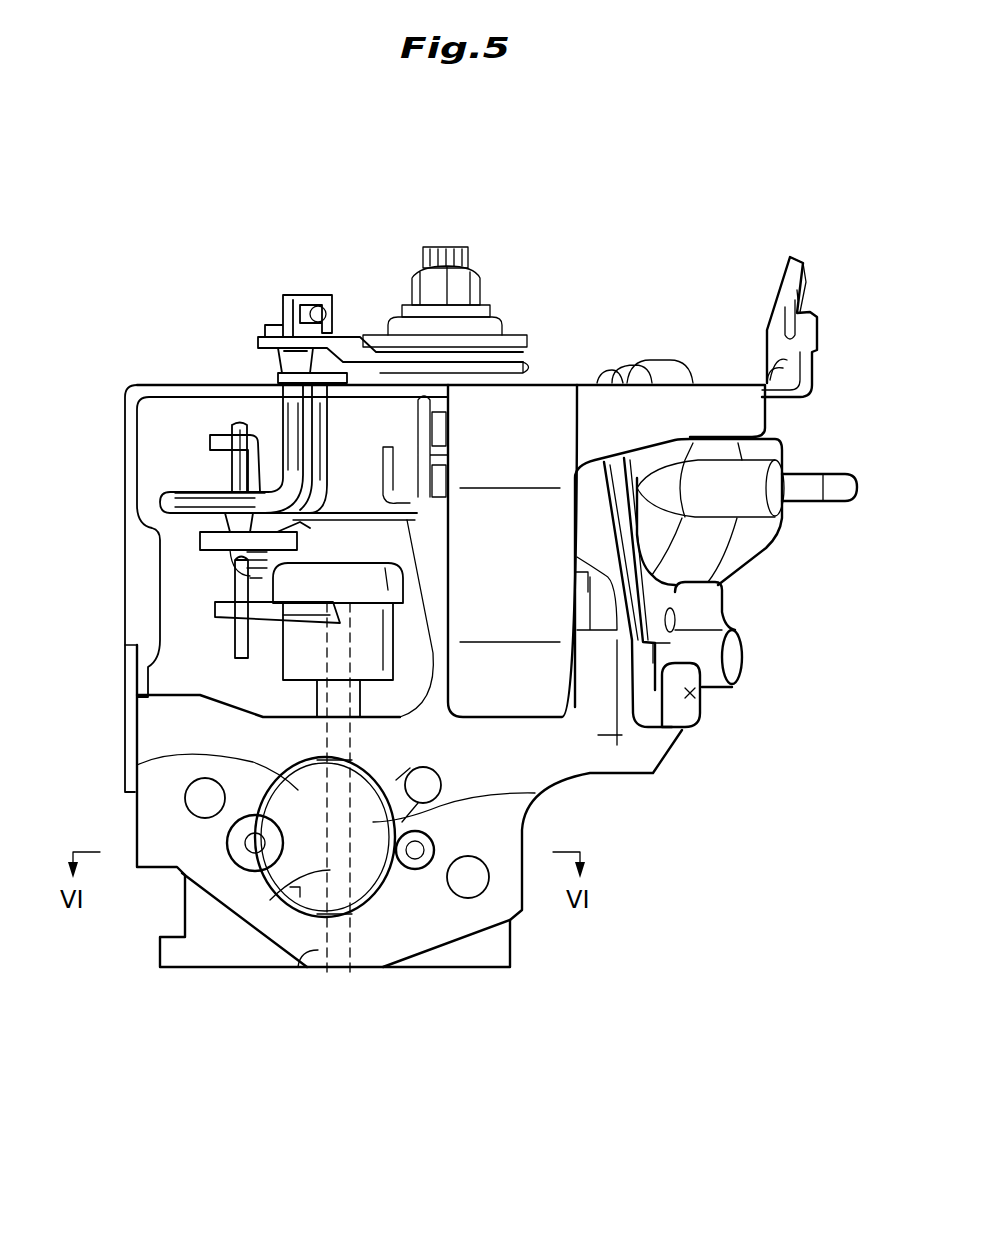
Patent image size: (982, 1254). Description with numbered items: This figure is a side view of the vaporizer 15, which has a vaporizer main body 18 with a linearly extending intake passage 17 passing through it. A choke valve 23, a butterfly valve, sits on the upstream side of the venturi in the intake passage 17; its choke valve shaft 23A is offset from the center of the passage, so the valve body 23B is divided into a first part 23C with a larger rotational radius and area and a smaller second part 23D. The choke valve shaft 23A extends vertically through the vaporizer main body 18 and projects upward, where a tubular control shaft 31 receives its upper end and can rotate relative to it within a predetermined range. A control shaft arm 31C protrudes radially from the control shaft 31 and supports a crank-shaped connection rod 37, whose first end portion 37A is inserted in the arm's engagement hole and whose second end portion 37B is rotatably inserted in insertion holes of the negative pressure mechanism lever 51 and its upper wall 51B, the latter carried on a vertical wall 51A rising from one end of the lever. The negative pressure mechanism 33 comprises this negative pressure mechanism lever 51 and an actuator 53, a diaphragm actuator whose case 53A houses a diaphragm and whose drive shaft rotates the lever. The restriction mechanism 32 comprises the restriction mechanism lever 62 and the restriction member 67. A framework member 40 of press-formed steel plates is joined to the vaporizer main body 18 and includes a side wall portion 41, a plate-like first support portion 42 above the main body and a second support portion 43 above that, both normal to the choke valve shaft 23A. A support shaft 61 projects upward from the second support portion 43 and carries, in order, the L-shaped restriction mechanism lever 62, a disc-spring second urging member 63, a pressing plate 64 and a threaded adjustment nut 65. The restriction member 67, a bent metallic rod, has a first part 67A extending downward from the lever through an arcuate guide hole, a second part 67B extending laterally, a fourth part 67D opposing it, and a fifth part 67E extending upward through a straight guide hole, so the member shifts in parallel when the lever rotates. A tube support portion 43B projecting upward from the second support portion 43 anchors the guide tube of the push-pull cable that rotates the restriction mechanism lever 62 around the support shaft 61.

The vaporizer 15 is at (162, 242).
The intake passage 17 is at (290, 890).
The vaporizer main body 18 is at (508, 947).
The choke valve 23 is at (386, 890).
The choke valve shaft 23A is at (318, 955).
The valve body 23B is at (137, 765).
The first part 23C is at (283, 868).
The second part 23D is at (540, 793).
The control shaft 31 is at (293, 665).
The control shaft arm 31C is at (330, 620).
The restriction mechanism 32 is at (374, 286).
The negative pressure mechanism 33 is at (741, 604).
The connection rod 37 is at (236, 651).
The first end portion 37A is at (225, 607).
The second end portion 37B is at (238, 463).
The framework member 40 is at (644, 788).
The side wall portion 41 is at (600, 735).
The first support portion 42 is at (430, 525).
The second support portion 43 is at (172, 383).
The tube support portion 43B is at (790, 290).
The negative pressure mechanism lever 51 is at (345, 510).
The vertical wall 51A is at (183, 497).
The upper wall 51B is at (213, 440).
The actuator 53 is at (749, 565).
The case 53A is at (760, 532).
The support shaft 61 is at (447, 247).
The restriction mechanism lever 62 is at (262, 340).
The second urging member 63 is at (500, 345).
The pressing plate 64 is at (490, 325).
The adjustment nut 65 is at (470, 288).
The restriction member 67 is at (168, 503).
The first part 67A is at (293, 440).
The second part 67B is at (194, 503).
The fourth part 67D is at (298, 540).
The fifth part 67E is at (322, 432).